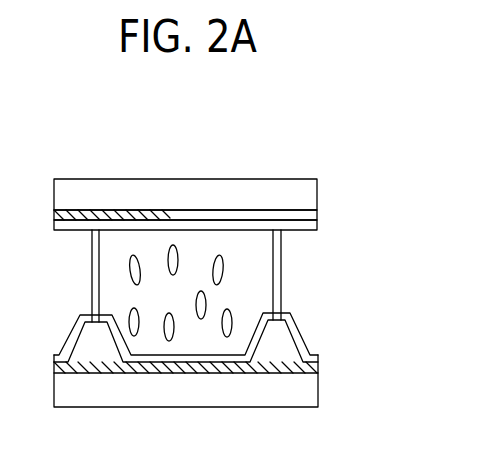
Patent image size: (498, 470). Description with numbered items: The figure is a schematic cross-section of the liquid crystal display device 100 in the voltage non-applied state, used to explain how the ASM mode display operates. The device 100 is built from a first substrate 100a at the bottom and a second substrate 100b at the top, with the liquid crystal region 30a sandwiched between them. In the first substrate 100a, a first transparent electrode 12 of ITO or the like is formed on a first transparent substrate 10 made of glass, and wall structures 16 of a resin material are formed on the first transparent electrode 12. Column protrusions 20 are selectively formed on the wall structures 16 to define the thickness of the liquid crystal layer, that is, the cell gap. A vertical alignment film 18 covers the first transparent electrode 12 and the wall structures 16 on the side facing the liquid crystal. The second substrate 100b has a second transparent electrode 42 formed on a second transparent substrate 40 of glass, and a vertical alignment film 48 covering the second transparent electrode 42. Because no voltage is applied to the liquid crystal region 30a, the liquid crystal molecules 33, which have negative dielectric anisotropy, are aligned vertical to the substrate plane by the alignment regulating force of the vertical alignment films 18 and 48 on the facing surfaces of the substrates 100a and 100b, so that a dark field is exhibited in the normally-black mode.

The liquid crystal display device 100 is at (303, 153).
The first substrate 100a is at (380, 338).
The second substrate 100b is at (378, 172).
The first transparent substrate 10 is at (308, 393).
The first transparent electrode 12 is at (164, 368).
The wall structures 16 is at (278, 347).
The vertical alignment film 18 is at (302, 323).
The column protrusions 20 is at (95, 283).
The liquid crystal region 30a is at (263, 278).
The liquid crystal molecules 33 is at (223, 257).
The second transparent substrate 40 is at (162, 195).
The second transparent electrode 42 is at (107, 213).
The vertical alignment film 48 is at (302, 231).